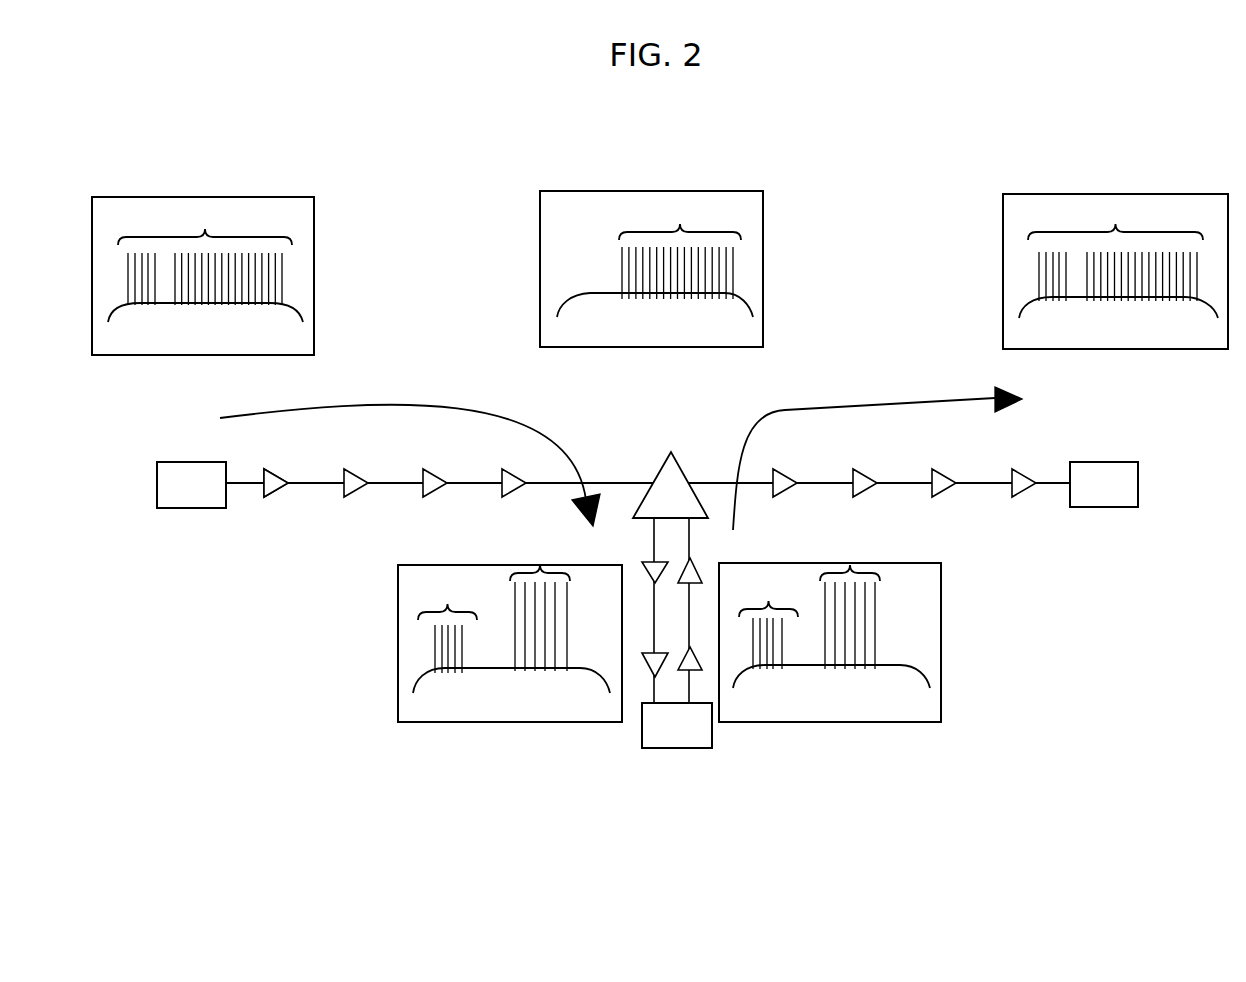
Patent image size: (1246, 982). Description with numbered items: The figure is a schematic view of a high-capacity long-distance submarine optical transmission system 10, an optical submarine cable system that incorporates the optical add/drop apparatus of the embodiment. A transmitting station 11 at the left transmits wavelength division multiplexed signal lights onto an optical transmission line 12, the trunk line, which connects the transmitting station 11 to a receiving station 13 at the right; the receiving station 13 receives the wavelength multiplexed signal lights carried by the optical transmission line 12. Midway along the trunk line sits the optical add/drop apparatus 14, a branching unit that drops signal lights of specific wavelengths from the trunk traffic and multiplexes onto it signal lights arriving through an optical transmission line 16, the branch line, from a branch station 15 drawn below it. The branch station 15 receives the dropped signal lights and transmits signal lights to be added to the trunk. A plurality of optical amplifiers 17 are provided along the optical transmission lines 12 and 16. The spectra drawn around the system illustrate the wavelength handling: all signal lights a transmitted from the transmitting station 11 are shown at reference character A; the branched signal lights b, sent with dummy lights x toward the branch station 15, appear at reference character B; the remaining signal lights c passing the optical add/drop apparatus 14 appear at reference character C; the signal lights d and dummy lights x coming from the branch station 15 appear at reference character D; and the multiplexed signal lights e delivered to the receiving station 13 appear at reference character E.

The high-capacity long-distance submarine optical transmission system 10 is at (383, 678).
The transmitting station 11 is at (189, 508).
The optical transmission line 12 is at (623, 483).
The receiving station 13 is at (1107, 507).
The optical add/drop apparatus 14 is at (678, 463).
The branch station 15 is at (678, 748).
The optical transmission line 16 is at (688, 545).
The optical amplifier 17 is at (277, 497).
The reference character A is at (187, 197).
The reference character B is at (515, 722).
The reference character C is at (653, 191).
The reference character D is at (828, 722).
The reference character E is at (1112, 194).